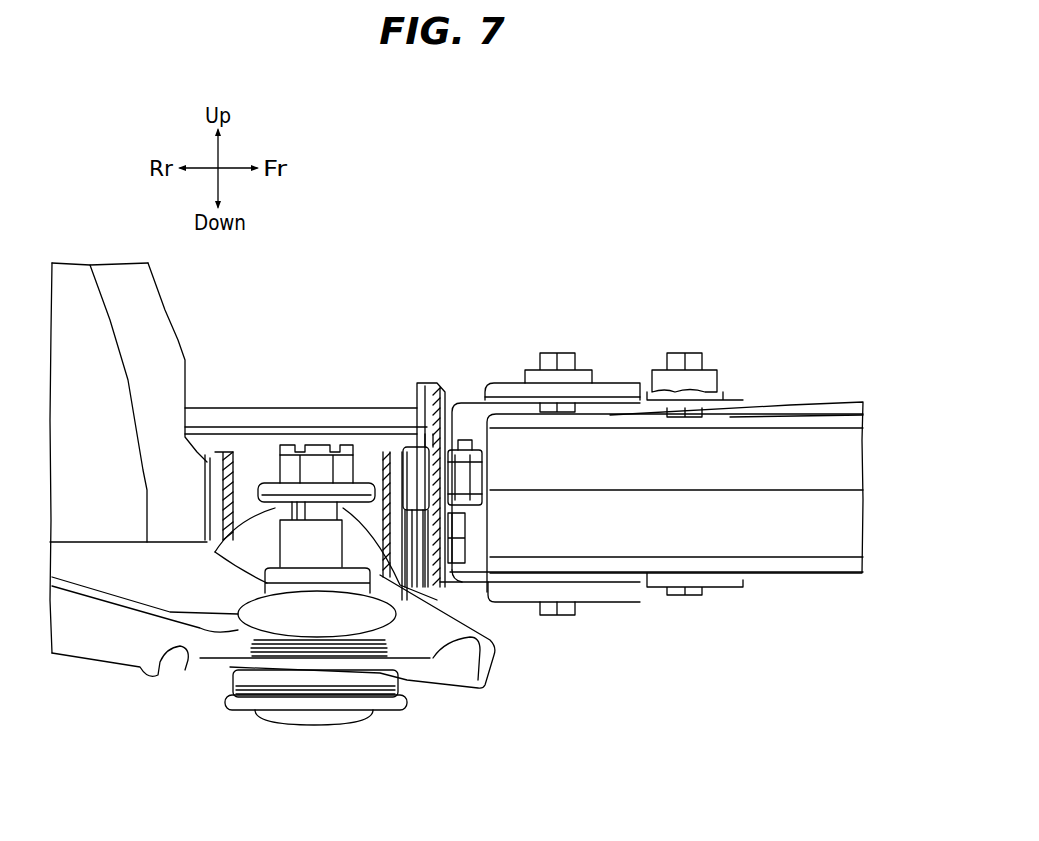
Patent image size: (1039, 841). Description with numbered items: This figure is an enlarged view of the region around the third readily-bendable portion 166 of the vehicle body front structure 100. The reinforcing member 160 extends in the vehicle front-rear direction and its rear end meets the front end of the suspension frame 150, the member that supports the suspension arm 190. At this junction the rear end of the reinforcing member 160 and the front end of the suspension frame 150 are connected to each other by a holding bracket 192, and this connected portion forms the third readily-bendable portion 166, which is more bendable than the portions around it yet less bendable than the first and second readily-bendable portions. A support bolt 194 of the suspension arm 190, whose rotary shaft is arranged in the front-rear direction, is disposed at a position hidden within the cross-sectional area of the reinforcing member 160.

The vehicle body front structure 100 is at (520, 292).
The suspension frame 150 is at (157, 329).
The reinforcing member 160 is at (804, 394).
The third readily-bendable portion 166 is at (443, 383).
The suspension arm 190 is at (198, 640).
The holding bracket 192 is at (467, 405).
The support bolt 194 is at (468, 538).